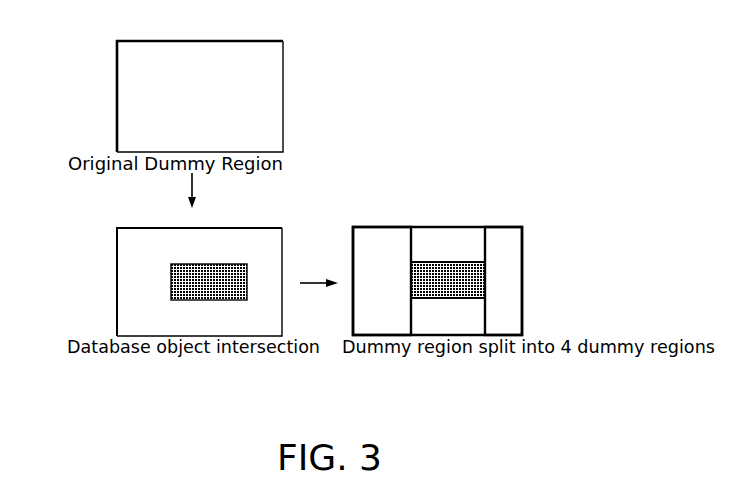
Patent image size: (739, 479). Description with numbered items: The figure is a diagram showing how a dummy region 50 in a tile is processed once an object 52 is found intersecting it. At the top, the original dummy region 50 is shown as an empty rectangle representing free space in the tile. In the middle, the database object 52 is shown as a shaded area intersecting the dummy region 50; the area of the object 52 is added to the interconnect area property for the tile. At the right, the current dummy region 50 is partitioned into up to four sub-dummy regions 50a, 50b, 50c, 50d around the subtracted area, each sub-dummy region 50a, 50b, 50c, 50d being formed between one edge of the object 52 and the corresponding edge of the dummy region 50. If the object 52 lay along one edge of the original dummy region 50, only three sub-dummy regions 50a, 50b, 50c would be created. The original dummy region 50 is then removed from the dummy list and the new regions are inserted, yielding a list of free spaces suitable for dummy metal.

The dummy region 50 is at (155, 175).
The object 52 is at (251, 245).
The sub-dummy region 50a is at (417, 244).
The sub-dummy region 50b is at (492, 208).
The sub-dummy region 50c is at (490, 351).
The sub-dummy region 50d is at (556, 275).